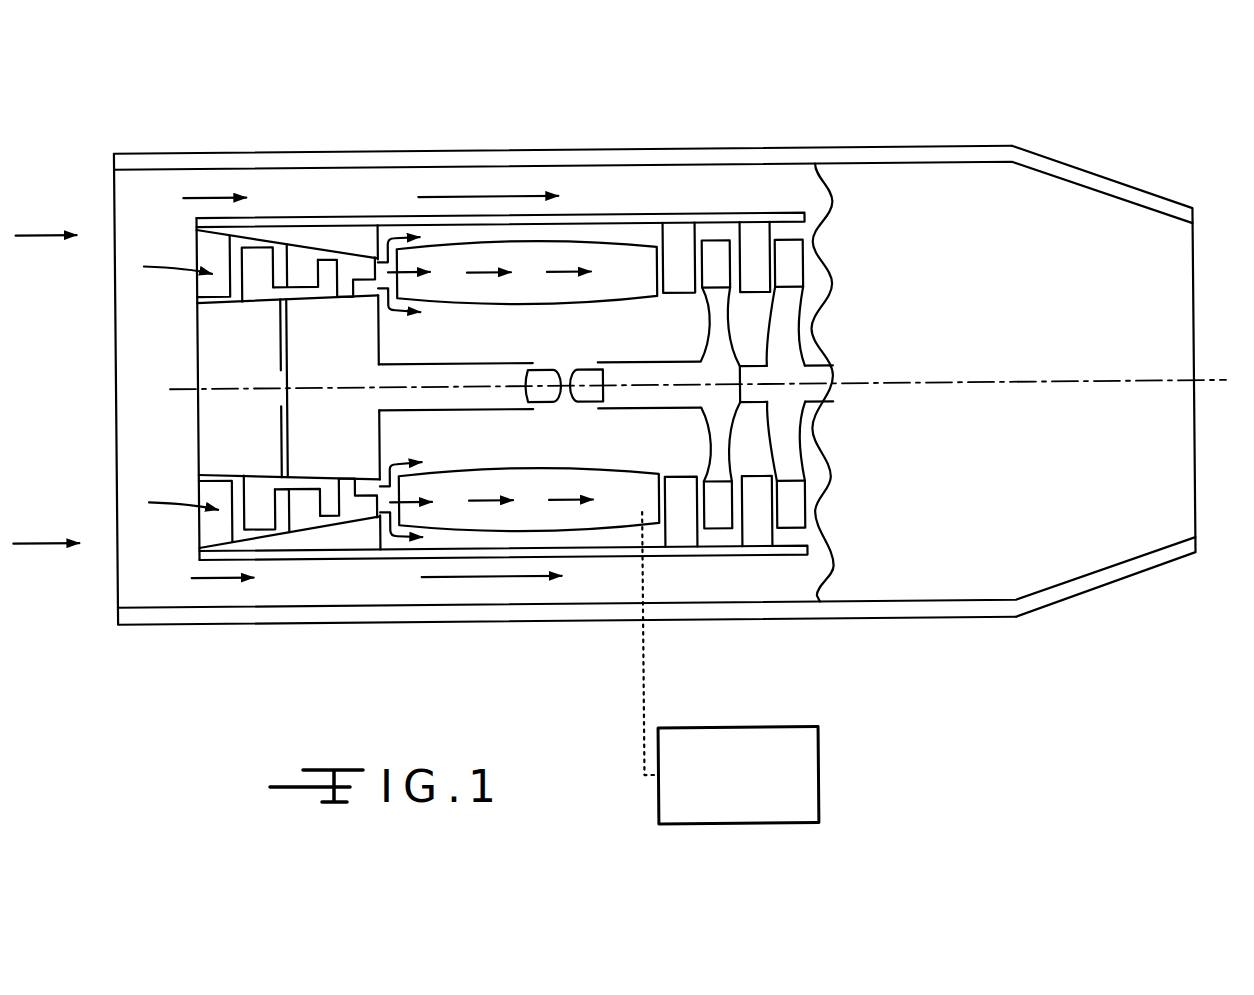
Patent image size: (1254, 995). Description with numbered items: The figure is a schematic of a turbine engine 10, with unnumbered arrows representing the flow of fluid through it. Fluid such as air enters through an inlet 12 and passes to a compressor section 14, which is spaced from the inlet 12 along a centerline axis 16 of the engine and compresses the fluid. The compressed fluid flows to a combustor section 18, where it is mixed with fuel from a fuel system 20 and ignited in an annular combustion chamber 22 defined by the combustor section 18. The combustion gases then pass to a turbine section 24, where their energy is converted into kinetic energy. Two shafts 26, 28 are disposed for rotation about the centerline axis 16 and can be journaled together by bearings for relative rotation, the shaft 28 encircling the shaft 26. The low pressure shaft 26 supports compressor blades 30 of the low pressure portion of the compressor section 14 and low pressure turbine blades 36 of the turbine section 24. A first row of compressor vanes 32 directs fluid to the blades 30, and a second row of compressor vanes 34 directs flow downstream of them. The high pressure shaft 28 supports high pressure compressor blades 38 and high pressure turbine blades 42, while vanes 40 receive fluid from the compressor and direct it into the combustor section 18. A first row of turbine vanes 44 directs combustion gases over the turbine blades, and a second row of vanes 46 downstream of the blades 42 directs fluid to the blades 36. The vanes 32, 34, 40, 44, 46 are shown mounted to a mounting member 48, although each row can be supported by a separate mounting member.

The turbine engine 10 is at (1025, 83).
The inlet 12 is at (116, 178).
The compressor section 14 is at (303, 575).
The centerline axis 16 is at (1203, 385).
The combustor section 18 is at (611, 556).
The fuel system 20 is at (752, 786).
The annular combustion chamber 22 is at (621, 287).
The turbine section 24 is at (789, 400).
The low pressure shaft 26 is at (215, 353).
The high pressure shaft 28 is at (447, 360).
The compressor blades 30 is at (259, 261).
The first row of compressor vanes 32 is at (195, 233).
The second row of compressor vanes 34 is at (299, 254).
The low pressure turbine blades 36 is at (789, 265).
The high pressure compressor blades 38 is at (337, 262).
The vanes 40 is at (369, 259).
The high pressure turbine blades 42 is at (724, 264).
The first row of turbine vanes 44 is at (682, 251).
The second row of vanes 46 is at (763, 234).
The mounting member 48 is at (603, 214).